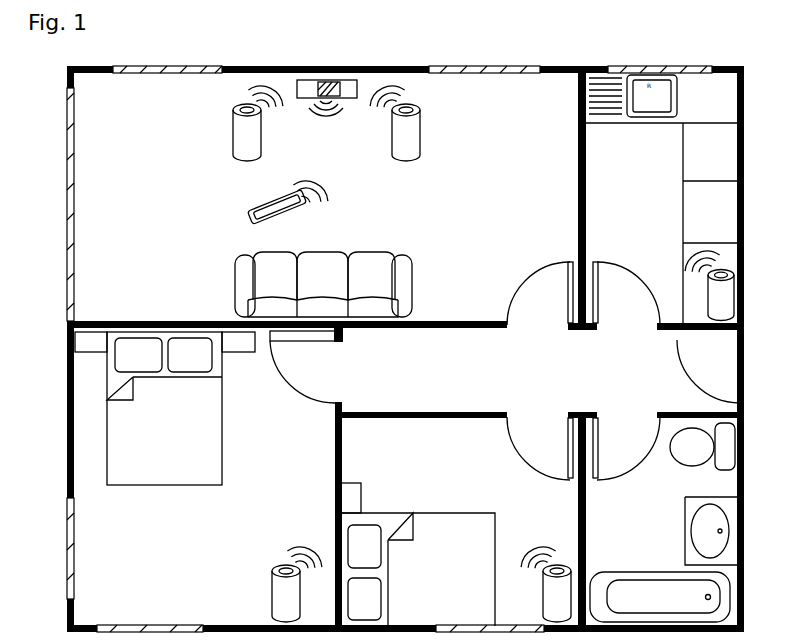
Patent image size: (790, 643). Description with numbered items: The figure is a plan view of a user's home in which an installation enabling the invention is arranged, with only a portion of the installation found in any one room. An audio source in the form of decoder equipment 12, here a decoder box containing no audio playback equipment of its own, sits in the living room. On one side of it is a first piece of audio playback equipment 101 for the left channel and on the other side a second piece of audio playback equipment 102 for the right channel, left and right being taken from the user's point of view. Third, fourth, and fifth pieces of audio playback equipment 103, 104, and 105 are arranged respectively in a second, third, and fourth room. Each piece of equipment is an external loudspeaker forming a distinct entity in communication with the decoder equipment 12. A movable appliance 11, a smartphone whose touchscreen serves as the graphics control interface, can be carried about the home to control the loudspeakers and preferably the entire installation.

The movable appliance 11 is at (250, 210).
The decoder equipment 12 is at (298, 99).
The first piece of audio playback equipment 101 is at (236, 137).
The second piece of audio playback equipment 102 is at (392, 140).
The third piece of audio playback equipment 103 is at (712, 292).
The fourth piece of audio playback equipment 104 is at (272, 585).
The fifth piece of audio playback equipment 105 is at (544, 590).